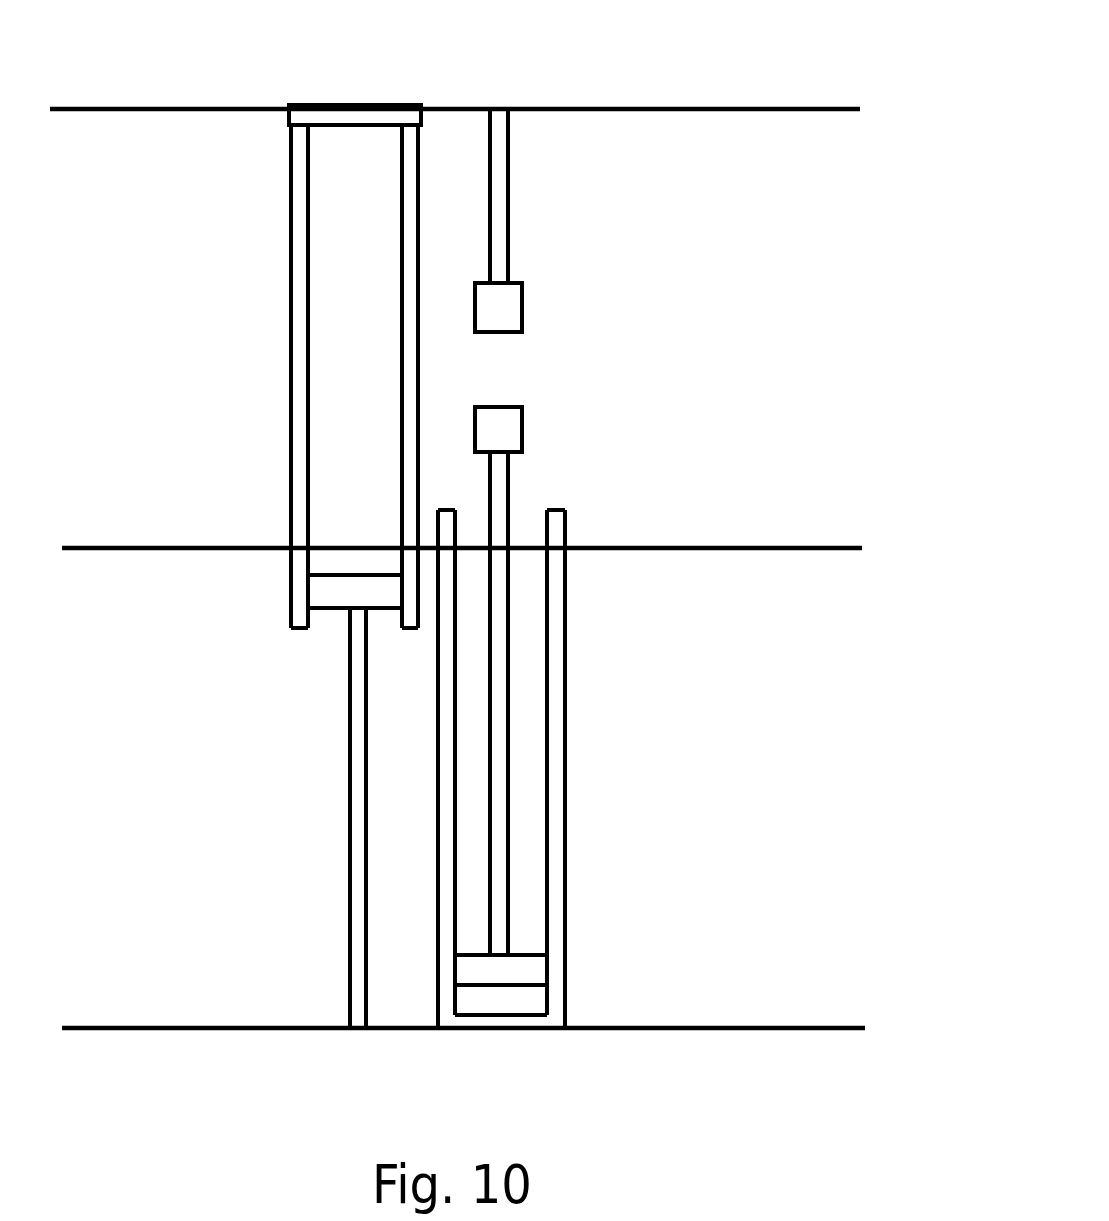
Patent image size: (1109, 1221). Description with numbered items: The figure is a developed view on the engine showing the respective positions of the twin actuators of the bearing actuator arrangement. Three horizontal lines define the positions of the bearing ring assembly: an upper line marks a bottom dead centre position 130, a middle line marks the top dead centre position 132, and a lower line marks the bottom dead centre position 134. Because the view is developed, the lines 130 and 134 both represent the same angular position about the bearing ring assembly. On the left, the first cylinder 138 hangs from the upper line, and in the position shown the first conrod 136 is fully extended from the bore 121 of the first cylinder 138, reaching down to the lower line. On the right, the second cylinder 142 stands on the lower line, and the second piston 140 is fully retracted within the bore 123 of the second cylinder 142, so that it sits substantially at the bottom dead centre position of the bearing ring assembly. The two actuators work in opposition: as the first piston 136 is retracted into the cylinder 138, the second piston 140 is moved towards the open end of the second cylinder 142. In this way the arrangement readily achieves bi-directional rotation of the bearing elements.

The bore 121 is at (392, 377).
The bore 123 is at (528, 880).
The bottom dead centre position 130 is at (742, 108).
The top dead centre position 132 is at (737, 547).
The bottom dead centre position 134 is at (766, 1027).
The first conrod 136 is at (355, 873).
The first cylinder 138 is at (298, 442).
The second piston 140 is at (538, 975).
The second cylinder 142 is at (566, 717).